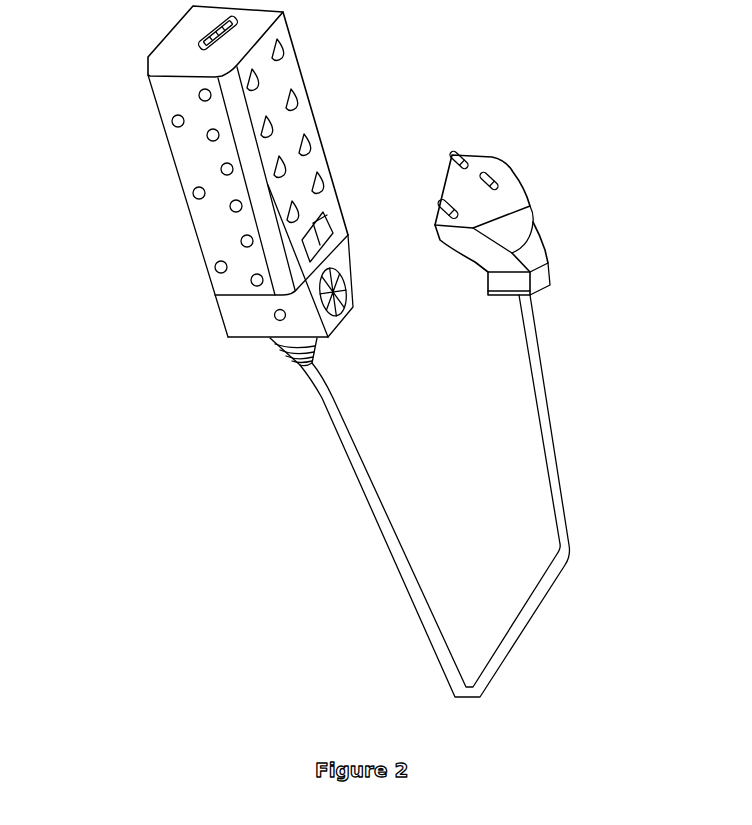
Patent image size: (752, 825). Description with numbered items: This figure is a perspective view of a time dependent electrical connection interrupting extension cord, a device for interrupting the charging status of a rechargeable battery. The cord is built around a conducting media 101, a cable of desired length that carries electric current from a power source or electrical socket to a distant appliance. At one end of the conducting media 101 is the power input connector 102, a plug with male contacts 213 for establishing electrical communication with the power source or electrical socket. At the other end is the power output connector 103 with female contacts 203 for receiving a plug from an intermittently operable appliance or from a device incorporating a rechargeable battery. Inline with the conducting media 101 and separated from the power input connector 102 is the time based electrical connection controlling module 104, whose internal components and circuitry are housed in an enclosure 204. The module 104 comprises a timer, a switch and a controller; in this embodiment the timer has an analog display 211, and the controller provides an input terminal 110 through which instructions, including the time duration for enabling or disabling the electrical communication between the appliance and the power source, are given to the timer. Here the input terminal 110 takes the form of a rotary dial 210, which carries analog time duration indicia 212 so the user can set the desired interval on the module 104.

The conducting media 101 is at (573, 430).
The power input connector 102 is at (556, 222).
The male contacts 213 is at (547, 223).
The power output connector 103 is at (147, 38).
The female contacts 203 is at (197, 36).
The electrical connection controlling module 104 is at (200, 171).
The enclosure 204 is at (181, 185).
The input terminal 110 is at (178, 348).
The rotary dial 210 is at (273, 318).
The analog display 211 is at (328, 338).
The analog time duration indicia 212 is at (348, 235).